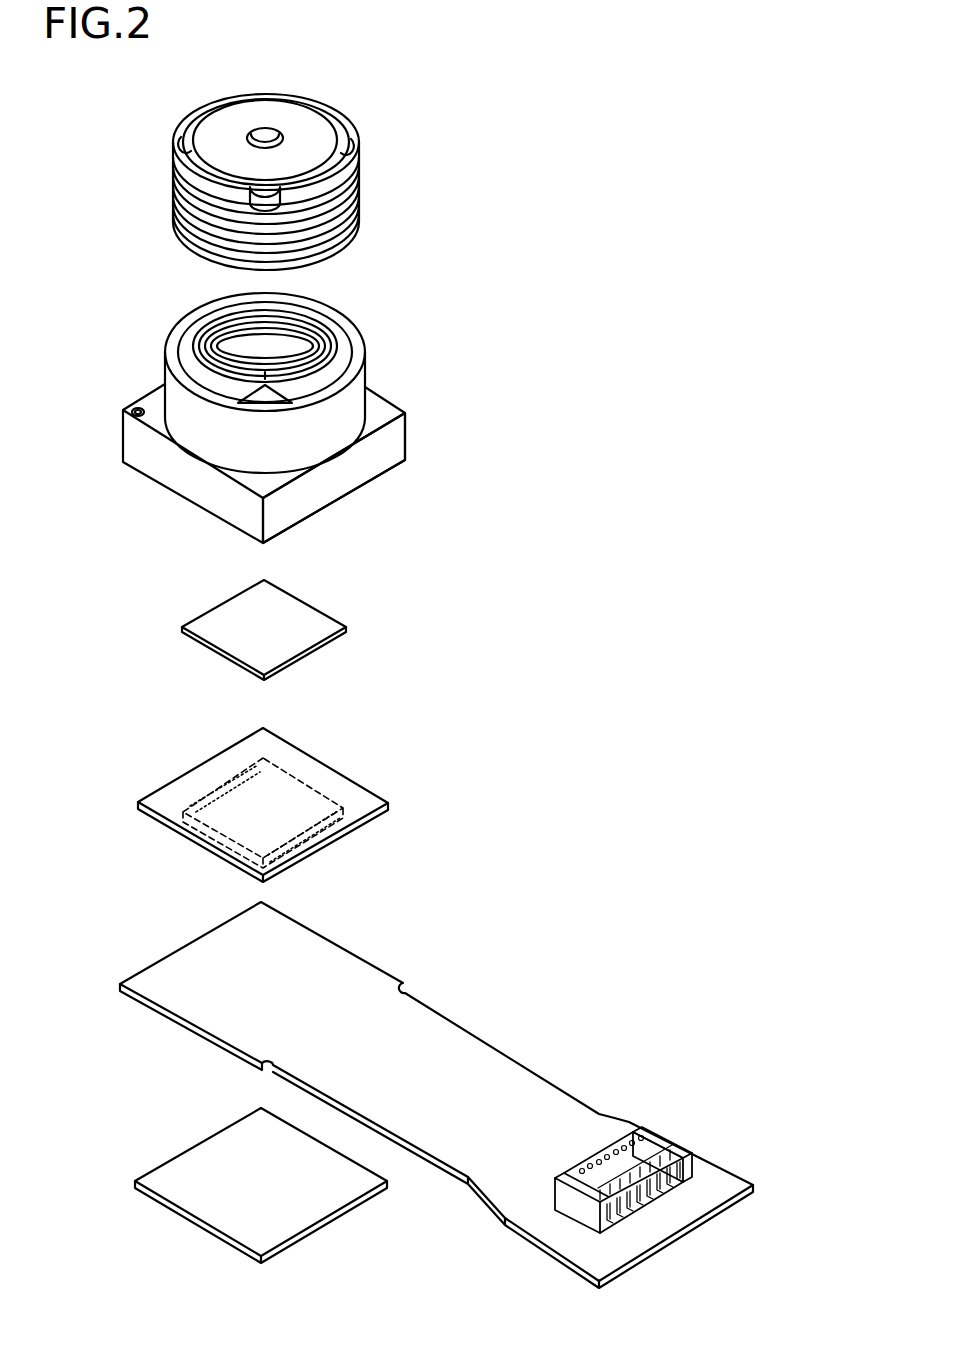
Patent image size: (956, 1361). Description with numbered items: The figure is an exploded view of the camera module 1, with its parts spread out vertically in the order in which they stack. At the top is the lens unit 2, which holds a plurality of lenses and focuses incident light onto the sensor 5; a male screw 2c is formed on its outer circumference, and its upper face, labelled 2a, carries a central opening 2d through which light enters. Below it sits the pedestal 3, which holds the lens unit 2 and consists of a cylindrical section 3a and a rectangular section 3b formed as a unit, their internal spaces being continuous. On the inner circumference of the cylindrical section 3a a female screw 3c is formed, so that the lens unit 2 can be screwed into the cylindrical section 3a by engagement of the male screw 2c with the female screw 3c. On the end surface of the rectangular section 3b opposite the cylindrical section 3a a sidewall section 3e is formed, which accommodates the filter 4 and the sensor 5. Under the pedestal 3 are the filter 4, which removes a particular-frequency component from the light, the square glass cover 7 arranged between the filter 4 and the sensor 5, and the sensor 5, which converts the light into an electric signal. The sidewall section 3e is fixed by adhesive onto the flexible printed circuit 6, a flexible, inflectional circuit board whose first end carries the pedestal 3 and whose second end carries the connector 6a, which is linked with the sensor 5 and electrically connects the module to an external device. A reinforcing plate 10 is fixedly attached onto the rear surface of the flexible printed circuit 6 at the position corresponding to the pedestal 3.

The camera module 1 is at (655, 200).
The lens unit 2 is at (370, 151).
The lens 2a is at (317, 135).
The male screw 2c is at (340, 218).
The aperture opening 2d is at (270, 137).
The pedestal 3 is at (347, 418).
The cylindrical section 3a is at (367, 343).
The rectangular section 3b is at (403, 432).
The female screw 3c is at (320, 342).
The sidewall section 3e is at (384, 478).
The filter 4 is at (303, 603).
The sensor 5 is at (210, 833).
The flexible printed circuit 6 is at (505, 1055).
The connector 6a is at (562, 1220).
The square glass cover 7 is at (383, 795).
The reinforcing plate 10 is at (167, 1162).